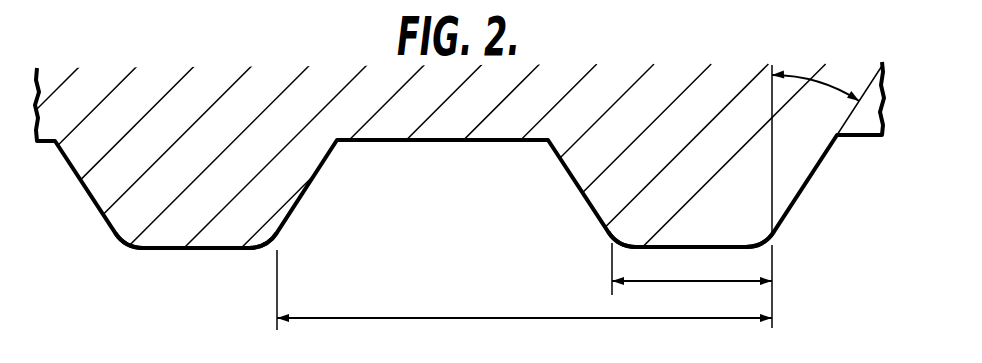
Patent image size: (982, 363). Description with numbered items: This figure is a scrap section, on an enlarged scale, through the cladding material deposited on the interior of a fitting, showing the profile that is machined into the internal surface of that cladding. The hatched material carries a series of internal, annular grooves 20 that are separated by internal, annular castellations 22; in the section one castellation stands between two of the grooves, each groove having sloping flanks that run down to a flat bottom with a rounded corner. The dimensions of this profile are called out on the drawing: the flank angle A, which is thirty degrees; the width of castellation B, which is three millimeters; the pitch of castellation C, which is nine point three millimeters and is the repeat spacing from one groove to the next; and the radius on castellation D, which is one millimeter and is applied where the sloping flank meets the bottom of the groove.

The internal annular groove 20 is at (417, 190).
The internal annular castellation 22 is at (198, 217).
The angle A is at (827, 87).
The width of castellation B is at (655, 280).
The pitch of castellation C is at (453, 283).
The radius on castellation D is at (618, 228).